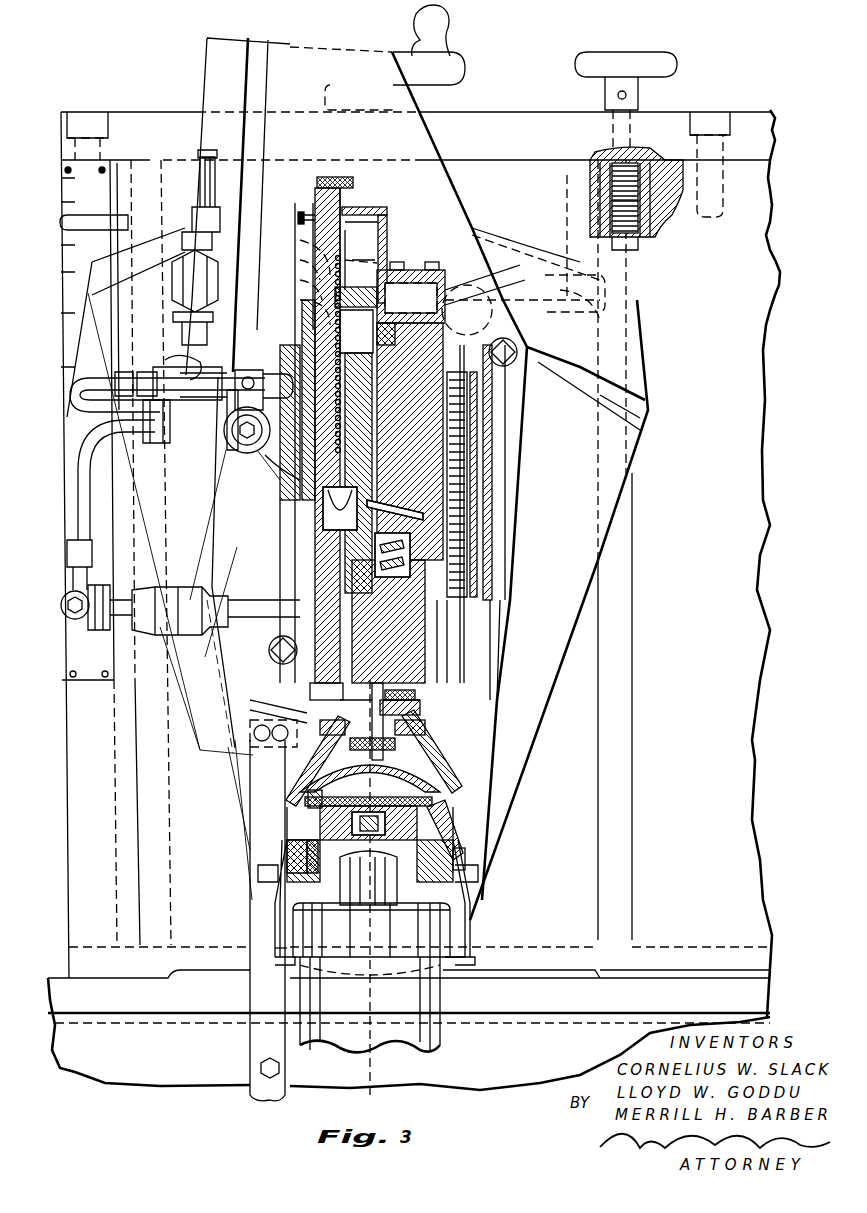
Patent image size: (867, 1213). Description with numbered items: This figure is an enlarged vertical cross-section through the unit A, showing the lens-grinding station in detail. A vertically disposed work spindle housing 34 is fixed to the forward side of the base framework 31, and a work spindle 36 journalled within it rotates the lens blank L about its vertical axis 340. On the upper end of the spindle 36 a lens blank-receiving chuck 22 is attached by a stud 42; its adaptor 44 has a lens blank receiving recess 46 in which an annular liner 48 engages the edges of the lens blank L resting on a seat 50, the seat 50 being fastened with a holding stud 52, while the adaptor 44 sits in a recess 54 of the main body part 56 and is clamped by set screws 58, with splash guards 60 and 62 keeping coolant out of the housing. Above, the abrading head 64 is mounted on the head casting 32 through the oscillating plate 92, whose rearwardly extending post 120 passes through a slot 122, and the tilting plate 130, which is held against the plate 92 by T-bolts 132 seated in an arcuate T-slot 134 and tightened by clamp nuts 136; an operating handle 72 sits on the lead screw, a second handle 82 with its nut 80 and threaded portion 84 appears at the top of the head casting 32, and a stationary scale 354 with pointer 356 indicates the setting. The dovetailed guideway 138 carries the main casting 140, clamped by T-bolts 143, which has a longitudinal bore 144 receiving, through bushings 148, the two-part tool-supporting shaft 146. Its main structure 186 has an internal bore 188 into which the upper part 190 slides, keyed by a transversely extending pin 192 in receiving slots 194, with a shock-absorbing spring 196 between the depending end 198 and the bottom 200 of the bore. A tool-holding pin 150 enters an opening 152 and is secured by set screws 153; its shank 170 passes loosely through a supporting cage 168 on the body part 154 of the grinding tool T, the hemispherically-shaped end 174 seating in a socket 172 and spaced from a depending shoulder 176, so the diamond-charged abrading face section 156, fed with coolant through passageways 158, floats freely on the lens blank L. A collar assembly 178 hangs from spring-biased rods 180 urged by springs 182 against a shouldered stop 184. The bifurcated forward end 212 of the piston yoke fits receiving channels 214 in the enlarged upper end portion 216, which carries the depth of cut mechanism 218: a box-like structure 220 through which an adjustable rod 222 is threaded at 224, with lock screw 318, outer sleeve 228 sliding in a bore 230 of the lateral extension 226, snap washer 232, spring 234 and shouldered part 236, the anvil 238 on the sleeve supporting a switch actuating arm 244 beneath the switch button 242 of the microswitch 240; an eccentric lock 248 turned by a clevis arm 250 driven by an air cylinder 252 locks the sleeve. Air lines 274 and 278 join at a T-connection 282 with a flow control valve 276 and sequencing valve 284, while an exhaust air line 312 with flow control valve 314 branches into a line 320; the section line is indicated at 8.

The head casting 32 is at (752, 677).
The base framework 31 is at (118, 1002).
The oscillating plate 92 is at (632, 478).
The dovetailed guideway 138 is at (475, 222).
The arcuate T-slot 134 is at (648, 402).
The operating handle 72 is at (455, 65).
The handle 82 is at (640, 60).
The nut 80 is at (655, 160).
The threaded portion 84 is at (642, 214).
The stationary scale 354 is at (62, 180).
The pointer 356 is at (120, 215).
The air line 274 is at (208, 152).
The adjustable flow control valve 276 is at (180, 265).
The clamp nuts 136 is at (180, 332).
The T-connection 282 is at (182, 362).
The air line 278 is at (65, 385).
The line 320 is at (80, 447).
The air sequencing valve 284 is at (152, 445).
The flow control valve 314 is at (178, 594).
The air line 312 is at (272, 605).
The clevis arm 250 is at (262, 375).
The double acting air cylinder 252 is at (250, 462).
The eccentric lock 248 is at (272, 490).
The section line 8 is at (242, 368).
The outer sleeve 228 is at (295, 310).
The depth of cut mechanism 218 is at (312, 295).
The threaded location 224 is at (375, 183).
The box-like main supporting structure 220 is at (368, 212).
The lock screw 318 is at (300, 210).
The shouldered part 236 is at (298, 222).
The spring 234 is at (300, 258).
The adjustable rod 222 is at (387, 225).
The microswitch 240 is at (385, 250).
The switch button 242 is at (388, 275).
The switch actuating arm 244 is at (432, 272).
The anvil 238 is at (356, 440).
The receiving channels 214 is at (412, 322).
The bore 230 is at (378, 432).
The receiving slots 194 is at (425, 517).
The upper part 190 is at (470, 400).
The springs 182 is at (470, 428).
The bushings 148 is at (465, 450).
The transversely extending pin 192 is at (470, 472).
The tilting plate 130 is at (505, 540).
The abrading head 64 is at (485, 410).
The depending end 198 is at (492, 520).
The shouldered stop 184 is at (470, 540).
The longitudinal bore 144 is at (448, 562).
The bottom of bore 200 is at (430, 582).
The spring-biased rods 180 is at (468, 605).
The tool-supporting shaft 146 is at (410, 617).
The bifurcated forward end 212 is at (470, 270).
The enlarged upper end portion 216 is at (495, 292).
The rearwardly extending post 120 is at (532, 292).
The slot 122 is at (595, 305).
The internal bore 188 is at (510, 338).
The T-bolts 132 is at (518, 362).
The opening 152 is at (377, 683).
The collar assembly 178 is at (320, 696).
The T-bolts 143 is at (269, 650).
The shank 170 is at (280, 705).
The socket 172 is at (260, 720).
The set screws 153 is at (415, 690).
The tool-holding pin 150 is at (420, 700).
The supporting cage 168 is at (425, 710).
The depending shoulder 176 is at (468, 700).
The passageways 158 is at (420, 745).
The grinding tool T is at (430, 760).
The lens blank L is at (435, 785).
The body part 154 is at (317, 767).
The diamond-charged abrading face section 156 is at (305, 795).
The hemispherically-shaped end 174 is at (425, 812).
The lens blank receiving recess 46 is at (440, 840).
The work spindle 36 is at (400, 880).
The recess 54 is at (465, 858).
The splash guard 60 is at (478, 876).
The adaptor 44 is at (470, 795).
The splash guard 62 is at (470, 928).
The stud 42 is at (362, 905).
The work spindle housing 34 is at (440, 992).
The axis 340 is at (378, 1068).
The annular liner 48 is at (290, 808).
The seat 50 is at (290, 818).
The set screws 58 is at (283, 838).
The lens blank-receiving chuck 22 is at (270, 840).
The holding stud 52 is at (278, 870).
The main body part 56 is at (275, 910).
The lateral extension 226 is at (312, 505).
The snap washer 232 is at (340, 530).
The main structure 186 is at (345, 530).
The main casting 140 is at (360, 550).
The shock-absorbing spring 196 is at (370, 560).
The unit A is at (568, 662).